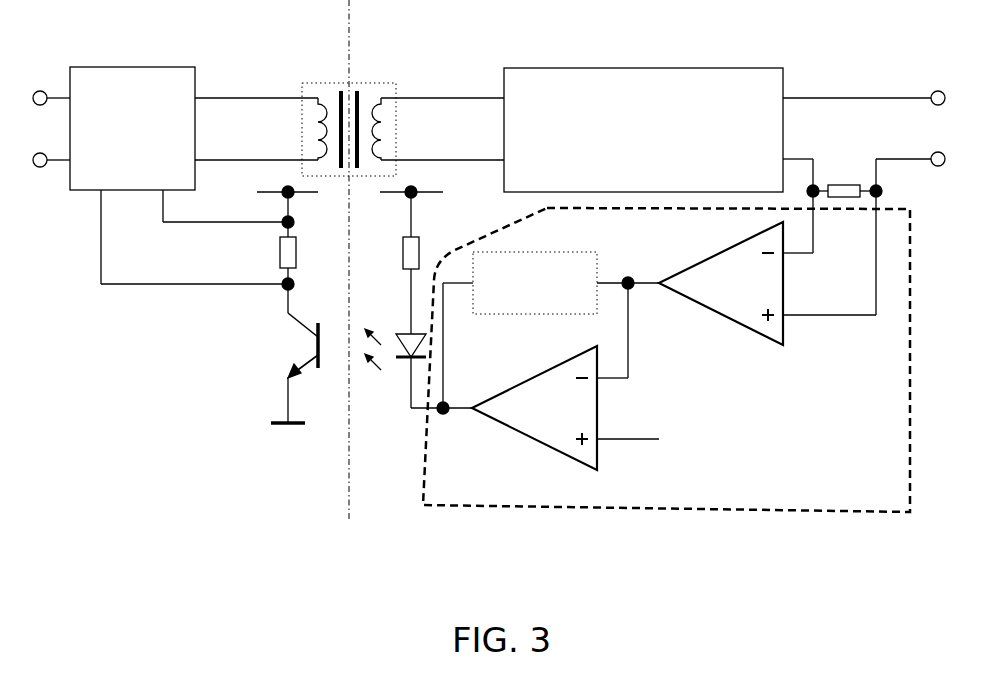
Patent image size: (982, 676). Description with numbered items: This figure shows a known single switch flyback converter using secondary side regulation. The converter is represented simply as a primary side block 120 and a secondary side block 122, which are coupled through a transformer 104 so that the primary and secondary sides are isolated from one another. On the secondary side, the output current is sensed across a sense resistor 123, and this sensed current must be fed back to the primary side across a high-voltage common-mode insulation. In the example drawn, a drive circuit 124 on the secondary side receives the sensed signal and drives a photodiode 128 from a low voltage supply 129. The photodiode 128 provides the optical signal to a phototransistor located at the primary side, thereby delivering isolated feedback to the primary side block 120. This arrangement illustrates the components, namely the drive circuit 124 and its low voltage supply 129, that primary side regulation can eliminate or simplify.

The transformer 104 is at (394, 83).
The primary side block 120 is at (70, 67).
The secondary side block 122 is at (504, 68).
The sense resistor 123 is at (826, 185).
The drive circuit 124 is at (804, 512).
The photodiode 128 is at (395, 385).
The low voltage supply 129 is at (425, 200).